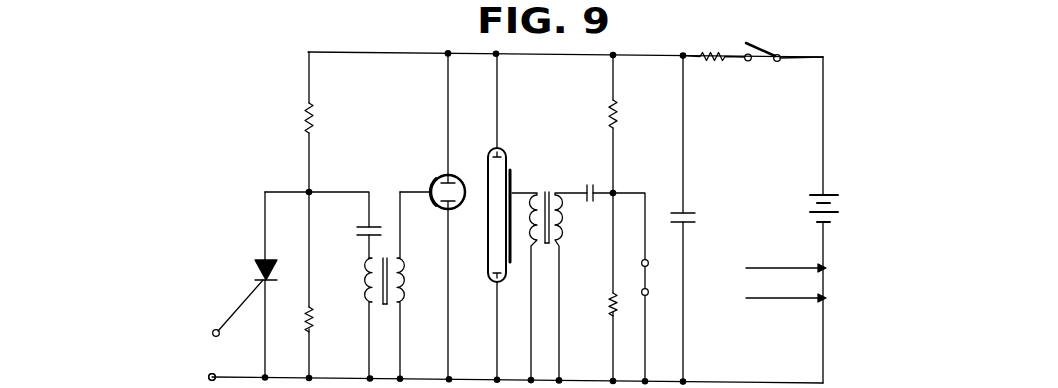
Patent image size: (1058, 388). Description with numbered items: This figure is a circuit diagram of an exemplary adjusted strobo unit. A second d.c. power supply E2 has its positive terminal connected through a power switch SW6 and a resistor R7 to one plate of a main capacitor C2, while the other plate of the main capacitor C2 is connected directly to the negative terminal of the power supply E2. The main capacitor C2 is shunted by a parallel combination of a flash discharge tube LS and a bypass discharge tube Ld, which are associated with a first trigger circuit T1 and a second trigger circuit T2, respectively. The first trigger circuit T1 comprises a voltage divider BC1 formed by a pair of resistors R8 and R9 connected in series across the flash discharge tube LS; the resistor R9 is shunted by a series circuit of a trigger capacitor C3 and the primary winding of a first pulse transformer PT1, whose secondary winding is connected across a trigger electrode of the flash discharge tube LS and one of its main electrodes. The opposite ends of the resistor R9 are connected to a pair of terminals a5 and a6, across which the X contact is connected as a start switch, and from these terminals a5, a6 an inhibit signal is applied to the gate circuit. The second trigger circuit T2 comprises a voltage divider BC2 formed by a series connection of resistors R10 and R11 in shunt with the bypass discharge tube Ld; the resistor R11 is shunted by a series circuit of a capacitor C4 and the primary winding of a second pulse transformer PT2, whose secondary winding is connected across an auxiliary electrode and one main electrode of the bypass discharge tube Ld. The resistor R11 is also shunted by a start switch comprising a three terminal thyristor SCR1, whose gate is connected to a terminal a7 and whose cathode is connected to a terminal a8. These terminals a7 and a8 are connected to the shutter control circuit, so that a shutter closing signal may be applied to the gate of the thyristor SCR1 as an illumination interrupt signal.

The resistor R10 is at (313, 114).
The resistor R11 is at (315, 316).
The voltage divider BC2 is at (387, 167).
The three terminal thyristor SCR1 is at (255, 264).
The terminal a7 is at (212, 334).
The terminal a8 is at (208, 377).
The capacitor C4 is at (361, 233).
The second trigger circuit T2 is at (404, 285).
The second pulse transformer PT2 is at (388, 306).
The bypass discharge tube Ld is at (440, 177).
The flash discharge tube LS is at (500, 147).
The first trigger circuit T1 is at (590, 281).
The first pulse transformer PT1 is at (547, 247).
The trigger capacitor C3 is at (585, 186).
The resistor R8 is at (617, 112).
The resistor R9 is at (610, 310).
The voltage divider BC1 is at (668, 179).
The terminal a5 is at (649, 263).
The terminal a6 is at (649, 292).
The main capacitor C2 is at (692, 221).
The resistor R7 is at (710, 61).
The power switch SW6 is at (758, 44).
The second d.c. power supply E2 is at (838, 204).